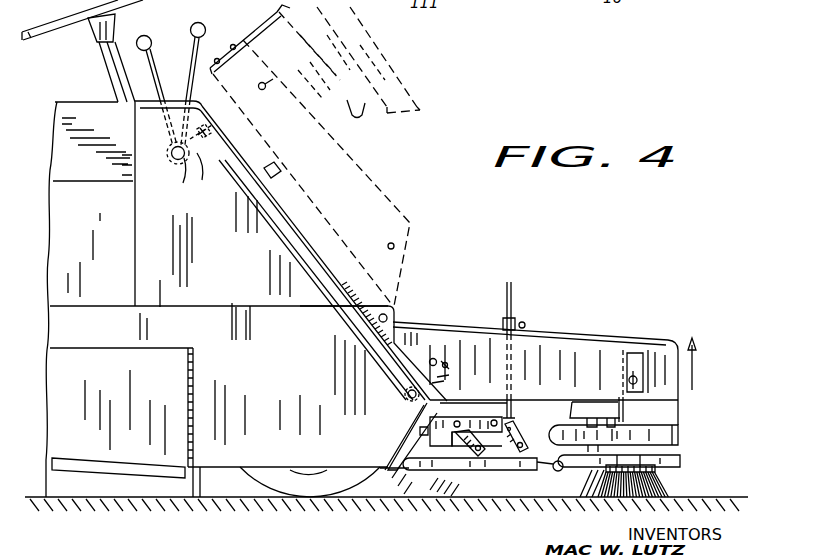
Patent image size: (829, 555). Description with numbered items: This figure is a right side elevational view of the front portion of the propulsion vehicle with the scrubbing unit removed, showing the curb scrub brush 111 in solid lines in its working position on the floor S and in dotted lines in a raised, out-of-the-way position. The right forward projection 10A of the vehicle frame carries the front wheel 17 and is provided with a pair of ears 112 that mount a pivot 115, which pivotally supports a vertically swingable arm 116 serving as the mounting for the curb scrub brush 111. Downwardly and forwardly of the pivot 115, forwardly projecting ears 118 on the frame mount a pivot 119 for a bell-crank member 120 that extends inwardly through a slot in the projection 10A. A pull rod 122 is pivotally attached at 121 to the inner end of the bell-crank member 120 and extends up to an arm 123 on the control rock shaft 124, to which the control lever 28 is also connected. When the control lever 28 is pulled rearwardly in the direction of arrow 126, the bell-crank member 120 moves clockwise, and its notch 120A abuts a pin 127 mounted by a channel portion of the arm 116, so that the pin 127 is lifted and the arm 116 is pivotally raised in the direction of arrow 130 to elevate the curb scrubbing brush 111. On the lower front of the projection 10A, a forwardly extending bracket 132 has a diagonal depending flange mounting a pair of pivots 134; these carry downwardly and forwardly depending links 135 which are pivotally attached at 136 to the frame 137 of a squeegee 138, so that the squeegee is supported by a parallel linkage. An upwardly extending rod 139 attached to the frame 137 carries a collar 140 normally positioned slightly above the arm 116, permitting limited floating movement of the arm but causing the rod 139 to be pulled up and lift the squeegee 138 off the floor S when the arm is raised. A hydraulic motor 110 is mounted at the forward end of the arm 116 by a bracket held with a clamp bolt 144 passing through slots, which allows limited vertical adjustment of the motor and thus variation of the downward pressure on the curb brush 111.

The floor S is at (218, 500).
The right forward projection 10A is at (335, 380).
The front wheel 17 is at (305, 490).
The control lever 28 is at (176, 65).
The hydraulic motor 110 is at (580, 404).
The curb scrub brush 111 is at (671, 459).
The ears 112 is at (365, 308).
The pivot 115 is at (394, 307).
The vertically swingable arm 116 is at (470, 328).
The forwardly projecting ears 118 is at (425, 410).
The pivot 119 is at (445, 367).
The bell-crank member 120 is at (452, 380).
The notch 120A is at (433, 358).
The pivotal attachment 121 is at (405, 396).
The pull rod 122 is at (309, 274).
The arm 123 is at (204, 166).
The control rock shaft 124 is at (171, 162).
The arrow 126 is at (131, 19).
The pin 127 is at (388, 243).
The arrow 130 is at (712, 365).
The bracket 132 is at (437, 440).
The pivots 134 is at (483, 395).
The links 135 is at (472, 433).
The pivotal attachments 136 is at (505, 447).
The squeegee frame 137 is at (540, 468).
The squeegee 138 is at (655, 480).
The rod 139 is at (513, 292).
The collar 140 is at (520, 324).
The clamp bolt 144 is at (638, 374).